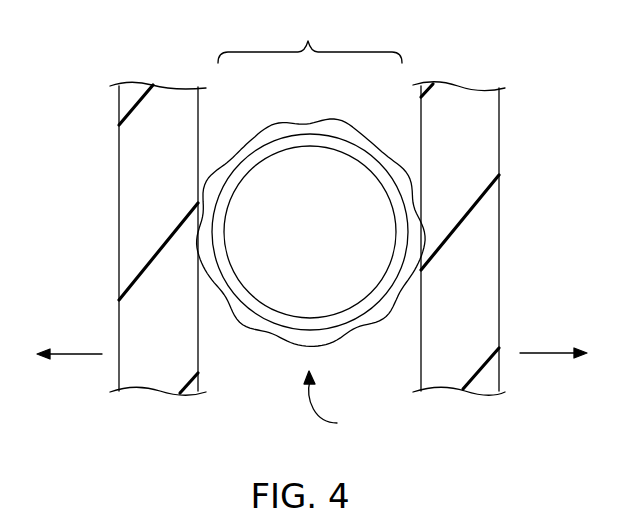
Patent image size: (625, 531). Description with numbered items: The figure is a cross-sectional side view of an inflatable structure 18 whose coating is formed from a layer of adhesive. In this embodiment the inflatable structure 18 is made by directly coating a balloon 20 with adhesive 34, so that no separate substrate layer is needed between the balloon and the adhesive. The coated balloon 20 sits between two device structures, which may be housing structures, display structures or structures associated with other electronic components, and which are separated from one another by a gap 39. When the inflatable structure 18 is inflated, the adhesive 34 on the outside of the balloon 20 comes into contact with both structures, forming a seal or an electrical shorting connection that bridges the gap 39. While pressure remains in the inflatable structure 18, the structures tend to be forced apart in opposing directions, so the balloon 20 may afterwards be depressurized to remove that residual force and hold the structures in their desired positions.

The inflatable structure 18 is at (334, 404).
The balloon 20 is at (272, 148).
The adhesive 34 is at (318, 118).
The gap 39 is at (310, 39).